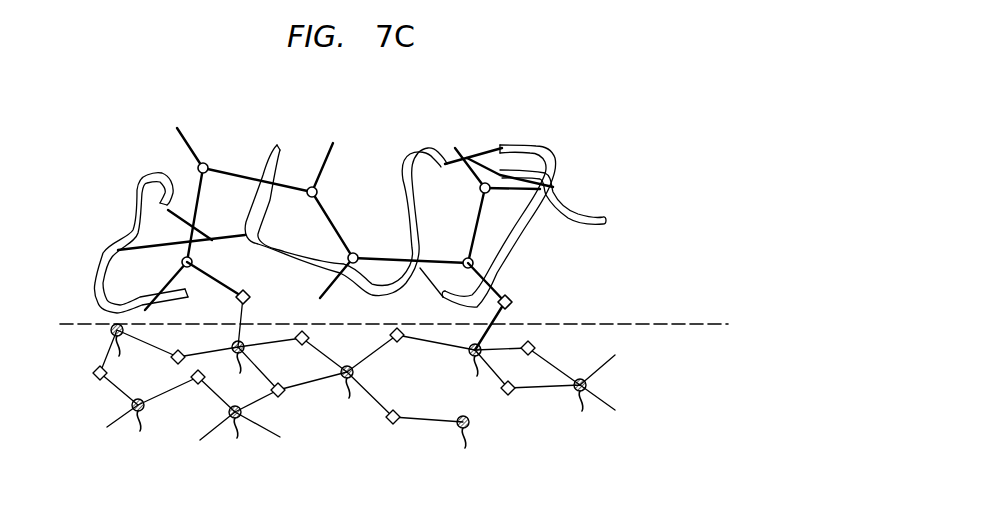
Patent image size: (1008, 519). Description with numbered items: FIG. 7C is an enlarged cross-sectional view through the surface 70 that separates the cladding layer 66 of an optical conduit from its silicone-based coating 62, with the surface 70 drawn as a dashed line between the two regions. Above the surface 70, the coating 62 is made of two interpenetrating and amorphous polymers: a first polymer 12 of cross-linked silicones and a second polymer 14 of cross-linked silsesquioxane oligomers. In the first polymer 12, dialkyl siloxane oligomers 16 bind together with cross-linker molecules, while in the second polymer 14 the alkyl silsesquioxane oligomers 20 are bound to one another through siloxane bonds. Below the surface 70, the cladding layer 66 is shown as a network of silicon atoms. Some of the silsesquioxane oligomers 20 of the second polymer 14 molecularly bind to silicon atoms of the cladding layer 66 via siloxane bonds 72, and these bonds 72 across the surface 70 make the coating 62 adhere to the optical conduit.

The first polymer 12 is at (505, 128).
The second polymer 14 is at (252, 150).
The dialkyl siloxane oligomers 16 is at (94, 277).
The alkyl silsesquioxane oligomers 20 is at (197, 258).
The silicone-based coating 62 is at (698, 254).
The cladding layer 66 is at (698, 440).
The surface 70 is at (56, 321).
The siloxane bonds 72 is at (251, 294).